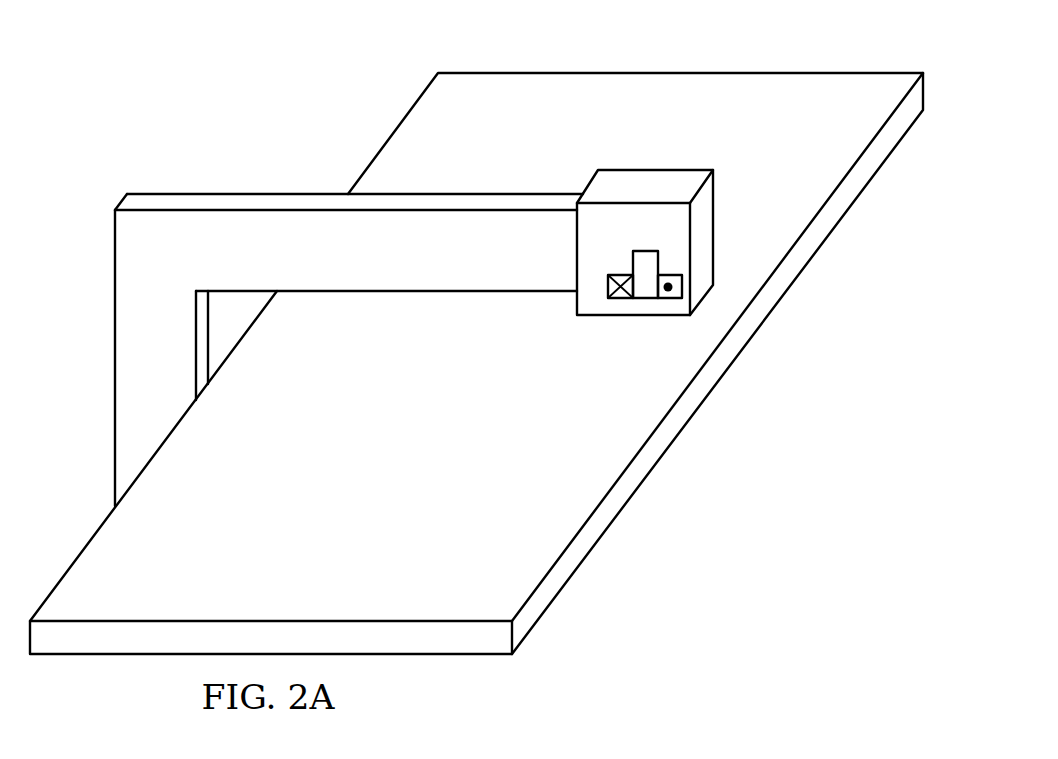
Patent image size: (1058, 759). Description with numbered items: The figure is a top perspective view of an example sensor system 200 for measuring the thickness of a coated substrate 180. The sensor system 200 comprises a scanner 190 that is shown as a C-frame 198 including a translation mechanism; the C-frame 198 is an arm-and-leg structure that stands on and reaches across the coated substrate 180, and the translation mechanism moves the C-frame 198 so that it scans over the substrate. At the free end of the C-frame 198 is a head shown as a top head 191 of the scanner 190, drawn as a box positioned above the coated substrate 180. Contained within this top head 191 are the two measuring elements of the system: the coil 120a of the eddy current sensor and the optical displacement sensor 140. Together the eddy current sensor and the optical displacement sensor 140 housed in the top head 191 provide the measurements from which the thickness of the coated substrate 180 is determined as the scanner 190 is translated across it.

The sensor system 200 is at (326, 73).
The coated substrate 180 is at (614, 498).
The scanner 190 is at (169, 178).
The C-frame 198 is at (465, 193).
The top head 191 is at (702, 241).
The optical displacement sensor 140 is at (645, 258).
The coil of the eddy current sensor 120a is at (618, 299).